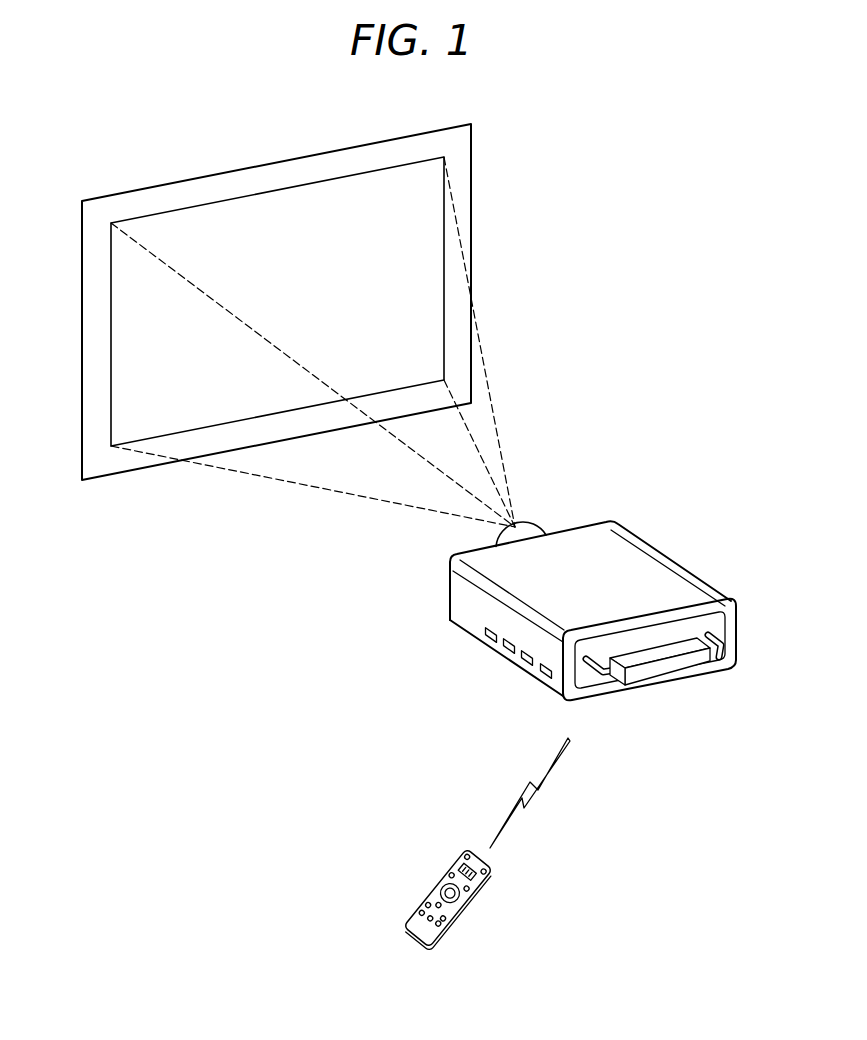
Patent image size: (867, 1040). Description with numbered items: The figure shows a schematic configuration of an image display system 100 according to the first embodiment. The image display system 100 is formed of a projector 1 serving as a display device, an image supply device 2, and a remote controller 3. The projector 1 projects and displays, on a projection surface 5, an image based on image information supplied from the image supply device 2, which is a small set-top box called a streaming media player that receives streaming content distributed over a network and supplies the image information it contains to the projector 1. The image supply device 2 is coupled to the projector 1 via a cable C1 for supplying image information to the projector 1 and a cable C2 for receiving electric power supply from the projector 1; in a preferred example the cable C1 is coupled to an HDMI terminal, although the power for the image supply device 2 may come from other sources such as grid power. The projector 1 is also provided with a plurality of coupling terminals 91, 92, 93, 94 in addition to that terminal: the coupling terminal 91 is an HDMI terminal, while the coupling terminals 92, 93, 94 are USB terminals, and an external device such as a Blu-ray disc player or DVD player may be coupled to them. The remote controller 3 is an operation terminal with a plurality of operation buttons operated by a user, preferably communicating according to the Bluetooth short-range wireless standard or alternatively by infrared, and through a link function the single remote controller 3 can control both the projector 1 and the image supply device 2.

The image display system 100 is at (673, 292).
The projector 1 is at (661, 567).
The image supply device 2 is at (667, 672).
The remote controller 3 is at (433, 890).
The projection surface 5 is at (275, 176).
The coupling terminal 91 is at (483, 643).
The coupling terminal 92 is at (505, 655).
The coupling terminal 93 is at (522, 670).
The coupling terminal 94 is at (543, 682).
The cable C1 is at (597, 675).
The cable C2 is at (720, 648).